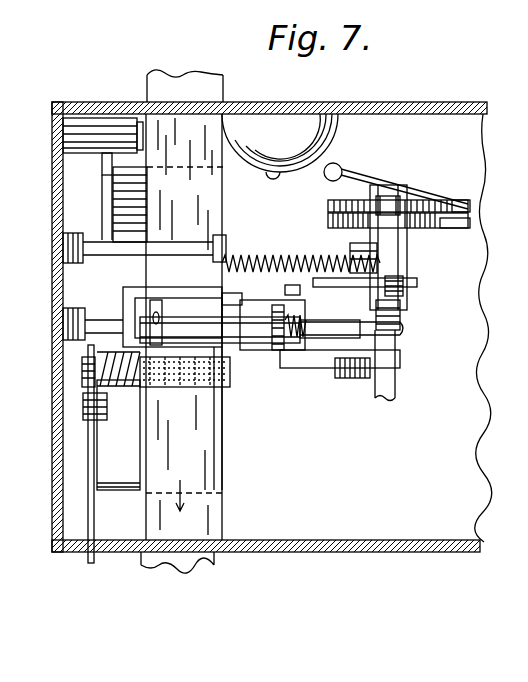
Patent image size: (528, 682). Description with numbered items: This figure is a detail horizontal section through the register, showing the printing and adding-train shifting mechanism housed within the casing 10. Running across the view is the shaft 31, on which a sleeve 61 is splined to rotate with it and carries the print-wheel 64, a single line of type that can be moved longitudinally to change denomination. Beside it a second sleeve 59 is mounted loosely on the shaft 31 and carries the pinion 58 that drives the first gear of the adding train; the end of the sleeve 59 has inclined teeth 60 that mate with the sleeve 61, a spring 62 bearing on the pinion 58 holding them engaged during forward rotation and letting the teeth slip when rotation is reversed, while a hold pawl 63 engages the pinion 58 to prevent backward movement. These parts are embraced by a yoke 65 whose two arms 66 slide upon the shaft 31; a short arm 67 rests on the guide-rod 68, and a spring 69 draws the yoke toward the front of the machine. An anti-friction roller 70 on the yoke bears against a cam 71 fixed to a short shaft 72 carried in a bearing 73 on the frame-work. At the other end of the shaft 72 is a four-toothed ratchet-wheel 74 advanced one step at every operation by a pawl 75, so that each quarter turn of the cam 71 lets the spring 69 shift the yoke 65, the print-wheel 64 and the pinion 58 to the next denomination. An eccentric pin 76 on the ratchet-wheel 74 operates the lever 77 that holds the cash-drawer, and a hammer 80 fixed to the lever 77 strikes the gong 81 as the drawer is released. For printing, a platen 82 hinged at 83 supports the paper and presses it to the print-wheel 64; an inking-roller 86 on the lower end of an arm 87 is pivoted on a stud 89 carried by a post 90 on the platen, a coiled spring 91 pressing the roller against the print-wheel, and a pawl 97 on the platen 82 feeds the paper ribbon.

The casing 10 is at (405, 102).
The shaft 31 is at (95, 318).
The pinion 58 is at (290, 342).
The sleeve 59 is at (274, 346).
The inclined teeth 60 is at (270, 320).
The sleeve 61 is at (220, 329).
The spring 62 is at (300, 368).
The hold pawl 63 is at (345, 378).
The print-wheel 64 is at (160, 300).
The yoke 65 is at (232, 299).
The arms 66 is at (125, 306).
The short arm 67 is at (226, 243).
The guide-rod 68 is at (178, 242).
The spring 69 is at (280, 257).
The anti-friction roller 70 is at (285, 289).
The cam 71 is at (405, 283).
The short shaft 72 is at (396, 206).
The bearing 73 is at (408, 248).
The ratchet-wheel 74 is at (330, 220).
The pawl 75 is at (470, 224).
The eccentric pin 76 is at (386, 196).
The lever 77 is at (470, 206).
The hammer 80 is at (340, 166).
The gong 81 is at (280, 146).
The platen 82 is at (122, 328).
The hinge 83 is at (100, 157).
The inking-roller 86 is at (224, 385).
The arm 87 is at (160, 386).
The stud 89 is at (85, 365).
The post 90 is at (80, 378).
The coiled spring 91 is at (105, 398).
The pawl 97 is at (90, 510).